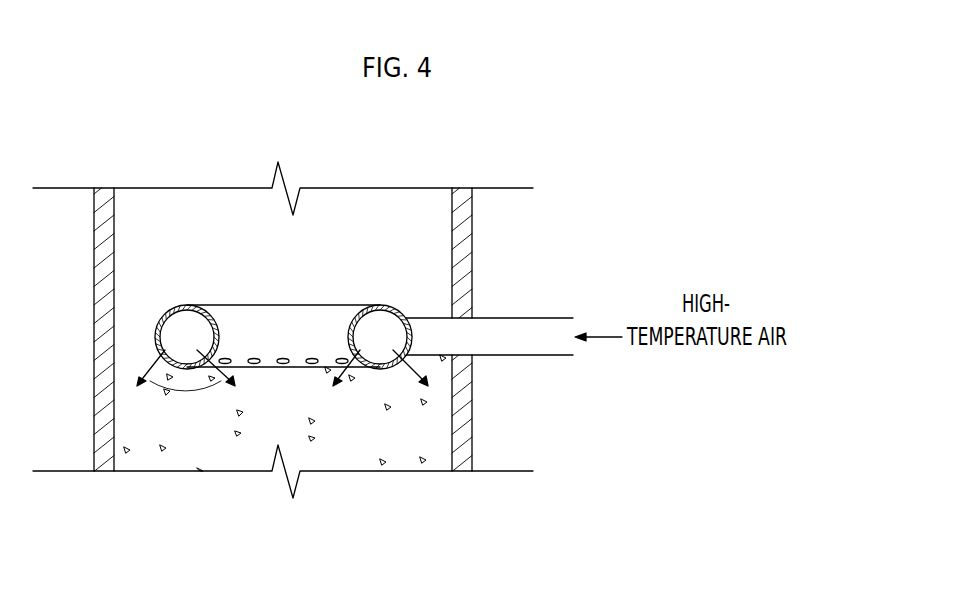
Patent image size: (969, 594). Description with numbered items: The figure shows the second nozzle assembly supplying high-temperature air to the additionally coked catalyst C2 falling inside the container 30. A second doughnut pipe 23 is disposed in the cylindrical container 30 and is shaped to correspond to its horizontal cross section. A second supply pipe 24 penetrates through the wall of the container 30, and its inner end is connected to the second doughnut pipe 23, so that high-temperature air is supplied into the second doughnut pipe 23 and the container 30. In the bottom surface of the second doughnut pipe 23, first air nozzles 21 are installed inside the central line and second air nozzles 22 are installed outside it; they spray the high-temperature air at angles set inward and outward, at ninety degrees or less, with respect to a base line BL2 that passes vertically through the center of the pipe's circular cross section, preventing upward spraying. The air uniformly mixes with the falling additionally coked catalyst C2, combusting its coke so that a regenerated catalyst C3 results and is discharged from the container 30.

The first air nozzles 21 is at (213, 357).
The second air nozzles 22 is at (163, 353).
The second doughnut pipe 23 is at (385, 305).
The second supply pipe 24 is at (527, 318).
The container 30 is at (100, 313).
The base line BL2 is at (186, 278).
The additionally coked catalyst C2 is at (355, 210).
The regenerated catalyst C3 is at (367, 458).